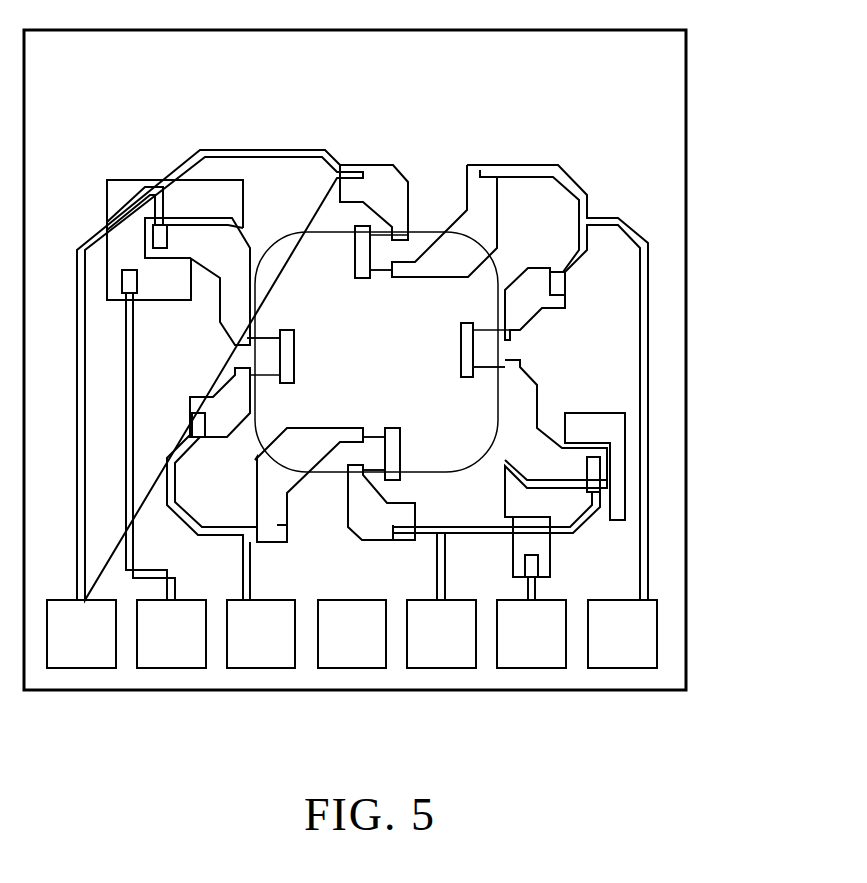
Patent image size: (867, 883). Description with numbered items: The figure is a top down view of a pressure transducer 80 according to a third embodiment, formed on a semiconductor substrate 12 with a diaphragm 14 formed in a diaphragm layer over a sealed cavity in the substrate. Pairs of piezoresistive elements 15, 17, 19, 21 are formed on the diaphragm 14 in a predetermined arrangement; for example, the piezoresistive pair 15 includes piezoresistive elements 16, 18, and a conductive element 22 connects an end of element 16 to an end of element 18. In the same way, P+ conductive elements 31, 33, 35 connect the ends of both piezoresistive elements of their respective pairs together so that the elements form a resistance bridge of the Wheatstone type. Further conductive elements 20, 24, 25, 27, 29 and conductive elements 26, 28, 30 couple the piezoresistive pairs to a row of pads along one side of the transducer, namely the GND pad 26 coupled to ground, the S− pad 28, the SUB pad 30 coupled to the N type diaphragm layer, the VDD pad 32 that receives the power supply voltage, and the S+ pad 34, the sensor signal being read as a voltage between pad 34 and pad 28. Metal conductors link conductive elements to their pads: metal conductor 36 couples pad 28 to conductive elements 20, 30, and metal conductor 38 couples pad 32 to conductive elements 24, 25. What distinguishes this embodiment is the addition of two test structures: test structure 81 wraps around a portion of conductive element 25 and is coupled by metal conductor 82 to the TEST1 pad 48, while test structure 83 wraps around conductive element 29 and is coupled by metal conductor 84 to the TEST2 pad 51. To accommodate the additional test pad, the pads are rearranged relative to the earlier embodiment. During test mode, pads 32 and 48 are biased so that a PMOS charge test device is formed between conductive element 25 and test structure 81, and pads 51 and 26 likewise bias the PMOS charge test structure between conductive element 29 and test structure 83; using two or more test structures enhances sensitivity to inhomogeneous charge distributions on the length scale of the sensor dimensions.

The semiconductor substrate 12 is at (666, 163).
The diaphragm 14 is at (357, 357).
The pair of piezoresistive elements 15 is at (376, 426).
The piezoresistive element 16 is at (378, 428).
The pair of piezoresistive elements 17 is at (262, 326).
The piezoresistive element 18 is at (374, 472).
The pair of piezoresistive elements 19 is at (384, 278).
The conductive element 20 is at (262, 500).
The pair of piezoresistive elements 21 is at (488, 376).
The conductive element 22 is at (401, 444).
The conductive element 24 is at (410, 514).
The conductive element 25 is at (528, 395).
The conductive element / GND pad 26 is at (80, 668).
The conductive element 27 is at (490, 200).
The conductive element / S− pad 28 is at (386, 164).
The conductive element 29 is at (240, 267).
The conductive element / SUB pad 30 is at (230, 390).
The conductive element 31 is at (468, 320).
The VDD pad 32 is at (440, 668).
The conductive element 33 is at (286, 384).
The S+ pad 34 is at (620, 668).
The conductive element 35 is at (362, 227).
The metal conductor 36 is at (213, 535).
The metal conductor 38 is at (497, 535).
The TEST1 pad 48 is at (530, 668).
The TEST2 pad 51 is at (170, 668).
The pressure transducer 80 is at (735, 100).
The test structure 81 is at (605, 519).
The metal conductor 82 is at (537, 590).
The test structure 83 is at (125, 180).
The metal conductor 84 is at (133, 333).